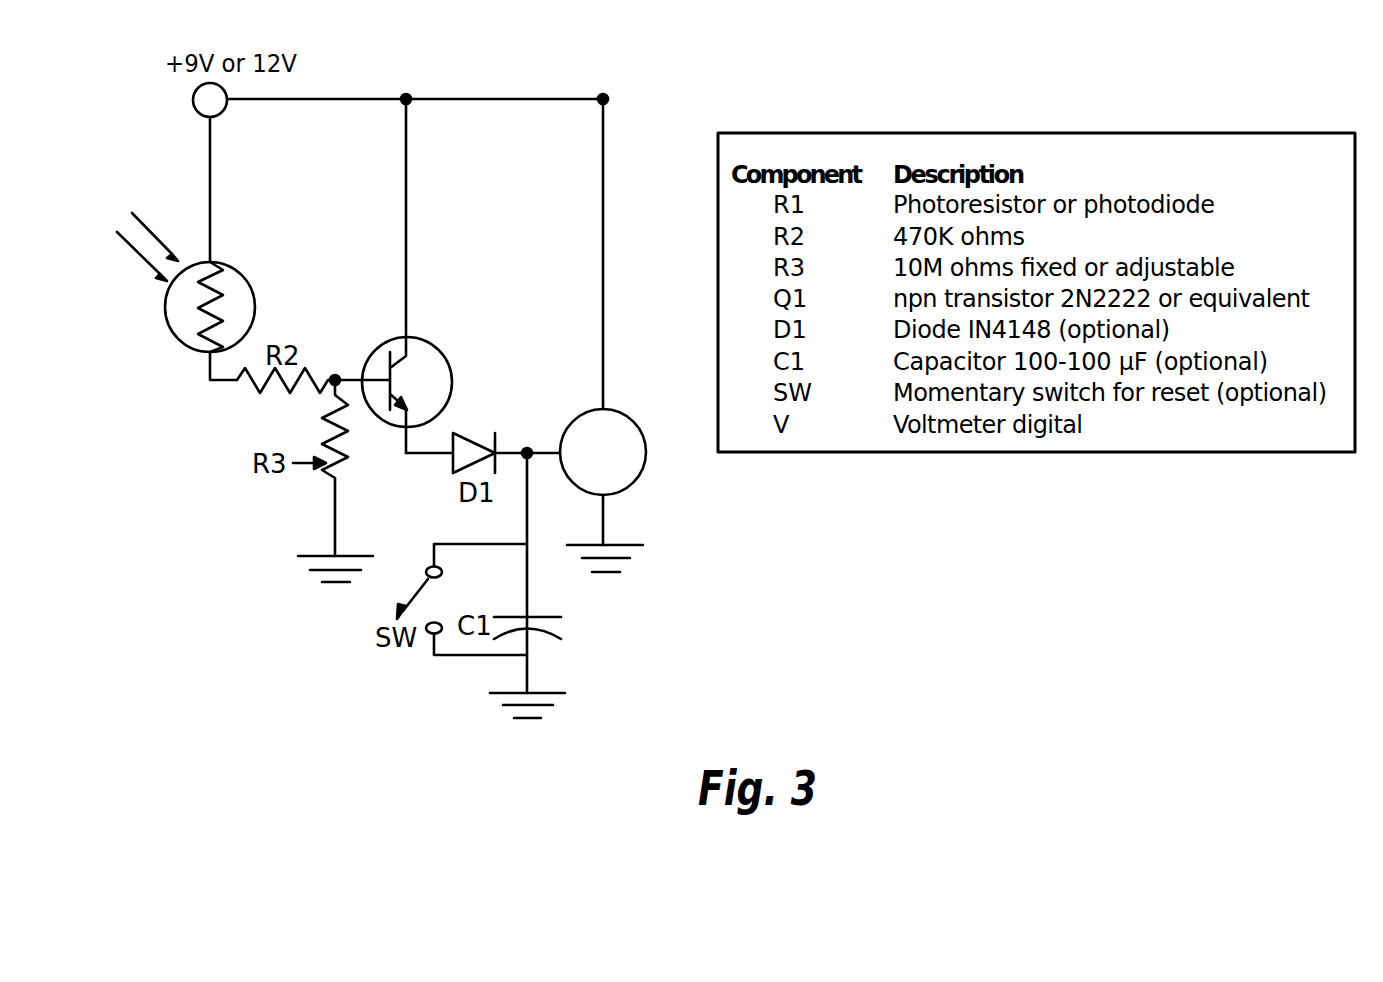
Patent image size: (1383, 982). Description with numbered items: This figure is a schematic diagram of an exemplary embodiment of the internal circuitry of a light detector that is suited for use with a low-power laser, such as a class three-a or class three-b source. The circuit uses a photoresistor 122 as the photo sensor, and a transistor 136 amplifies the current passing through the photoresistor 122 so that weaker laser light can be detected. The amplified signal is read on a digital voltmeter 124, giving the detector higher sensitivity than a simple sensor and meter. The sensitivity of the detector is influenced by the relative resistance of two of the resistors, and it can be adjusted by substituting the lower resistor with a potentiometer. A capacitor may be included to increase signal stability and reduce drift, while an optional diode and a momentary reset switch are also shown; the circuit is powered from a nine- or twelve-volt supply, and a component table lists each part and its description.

The photoresistor 122 is at (178, 343).
The voltmeter 124 is at (631, 415).
The transistor 136 is at (384, 354).